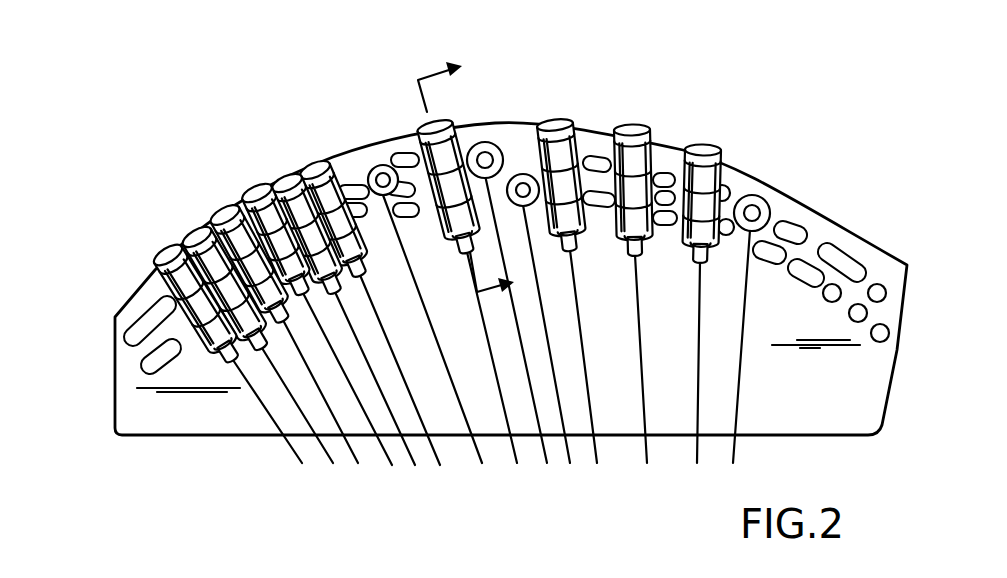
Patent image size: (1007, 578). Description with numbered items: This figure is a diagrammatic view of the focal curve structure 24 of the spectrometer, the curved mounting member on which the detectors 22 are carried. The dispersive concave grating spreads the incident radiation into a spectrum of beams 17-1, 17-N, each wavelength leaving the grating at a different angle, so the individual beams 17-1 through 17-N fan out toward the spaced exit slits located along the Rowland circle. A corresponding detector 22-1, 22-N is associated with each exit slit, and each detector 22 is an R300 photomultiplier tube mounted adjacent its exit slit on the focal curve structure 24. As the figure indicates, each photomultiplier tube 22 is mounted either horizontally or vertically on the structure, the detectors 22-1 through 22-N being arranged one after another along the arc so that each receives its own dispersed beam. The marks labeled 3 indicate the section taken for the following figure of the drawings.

The detector 22 is at (208, 228).
The first detector 22-1 is at (150, 267).
The Nth detector 22-N is at (752, 200).
The focal curve structure 24 is at (813, 222).
The first dispersed beam 17-1 is at (263, 408).
The Nth dispersed beam 17-N is at (737, 405).
The section line for FIG. 3 is at (466, 162).